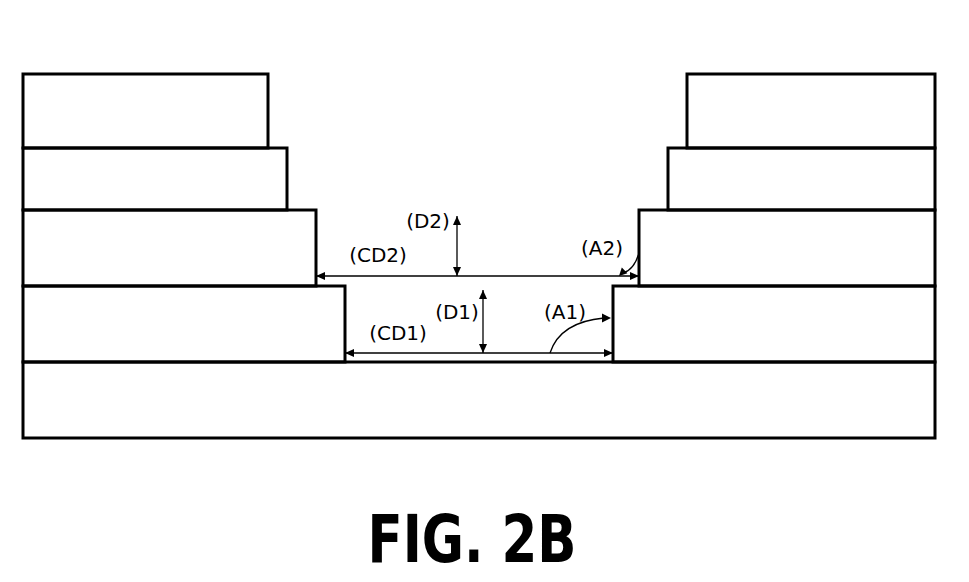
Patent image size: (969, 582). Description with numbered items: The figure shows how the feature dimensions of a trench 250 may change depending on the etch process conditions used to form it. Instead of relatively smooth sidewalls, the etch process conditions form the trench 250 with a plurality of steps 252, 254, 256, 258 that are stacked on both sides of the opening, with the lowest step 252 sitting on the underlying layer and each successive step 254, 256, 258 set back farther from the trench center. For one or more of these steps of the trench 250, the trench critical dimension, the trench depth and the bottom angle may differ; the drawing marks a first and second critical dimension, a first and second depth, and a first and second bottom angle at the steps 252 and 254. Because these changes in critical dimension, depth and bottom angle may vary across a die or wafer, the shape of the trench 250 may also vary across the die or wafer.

The trench 250 is at (494, 78).
The step 252 is at (479, 324).
The step 254 is at (479, 248).
The step 256 is at (479, 179).
The step 258 is at (479, 111).